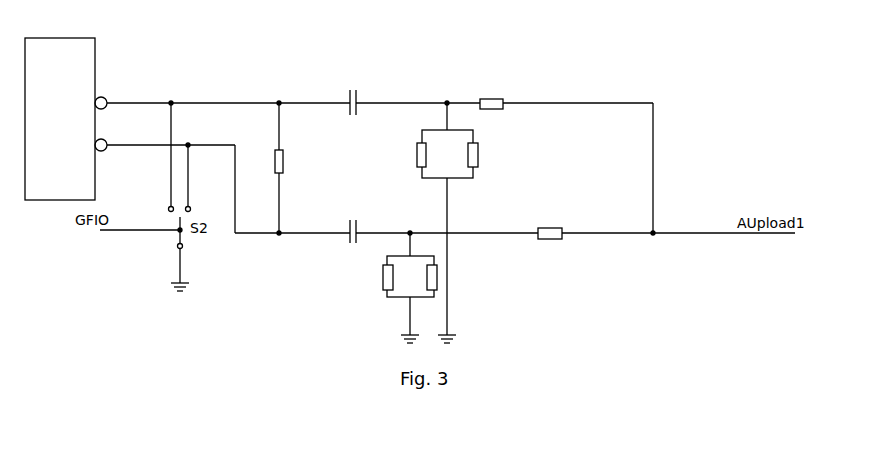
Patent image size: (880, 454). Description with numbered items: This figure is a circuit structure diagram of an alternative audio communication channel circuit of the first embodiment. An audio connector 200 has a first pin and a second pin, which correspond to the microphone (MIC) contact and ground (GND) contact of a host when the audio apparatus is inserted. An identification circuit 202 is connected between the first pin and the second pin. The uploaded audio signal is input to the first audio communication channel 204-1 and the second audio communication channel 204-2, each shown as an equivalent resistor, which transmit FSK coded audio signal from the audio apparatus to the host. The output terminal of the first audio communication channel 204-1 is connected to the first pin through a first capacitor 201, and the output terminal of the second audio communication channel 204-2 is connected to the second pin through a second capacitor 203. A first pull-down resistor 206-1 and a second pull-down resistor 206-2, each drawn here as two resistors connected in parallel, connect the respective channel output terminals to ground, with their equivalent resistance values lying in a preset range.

The audio connector 200 is at (87, 68).
The first capacitor 201 is at (358, 92).
The identification circuit 202 is at (278, 165).
The second capacitor 203 is at (358, 222).
The first audio communication channel 204-1 is at (497, 102).
The second audio communication channel 204-2 is at (552, 228).
The first pull-down resistor 206-1 is at (450, 153).
The second pull-down resistor 206-2 is at (402, 269).